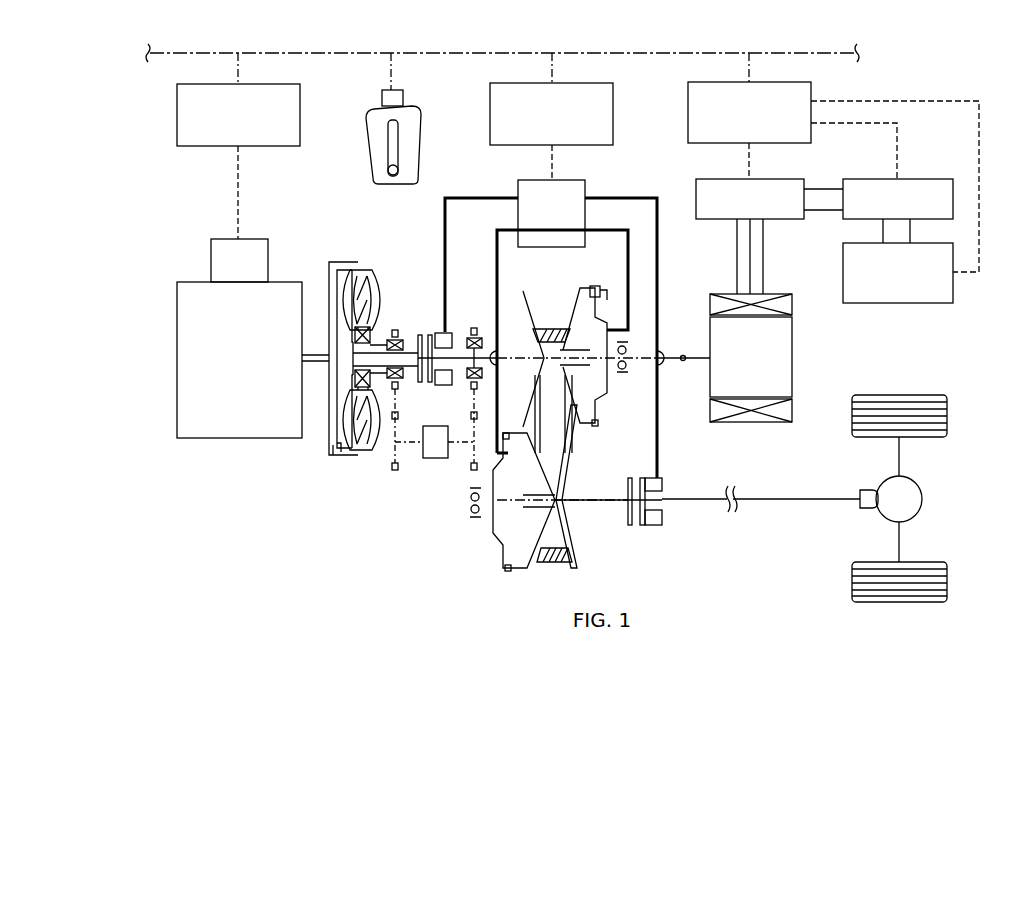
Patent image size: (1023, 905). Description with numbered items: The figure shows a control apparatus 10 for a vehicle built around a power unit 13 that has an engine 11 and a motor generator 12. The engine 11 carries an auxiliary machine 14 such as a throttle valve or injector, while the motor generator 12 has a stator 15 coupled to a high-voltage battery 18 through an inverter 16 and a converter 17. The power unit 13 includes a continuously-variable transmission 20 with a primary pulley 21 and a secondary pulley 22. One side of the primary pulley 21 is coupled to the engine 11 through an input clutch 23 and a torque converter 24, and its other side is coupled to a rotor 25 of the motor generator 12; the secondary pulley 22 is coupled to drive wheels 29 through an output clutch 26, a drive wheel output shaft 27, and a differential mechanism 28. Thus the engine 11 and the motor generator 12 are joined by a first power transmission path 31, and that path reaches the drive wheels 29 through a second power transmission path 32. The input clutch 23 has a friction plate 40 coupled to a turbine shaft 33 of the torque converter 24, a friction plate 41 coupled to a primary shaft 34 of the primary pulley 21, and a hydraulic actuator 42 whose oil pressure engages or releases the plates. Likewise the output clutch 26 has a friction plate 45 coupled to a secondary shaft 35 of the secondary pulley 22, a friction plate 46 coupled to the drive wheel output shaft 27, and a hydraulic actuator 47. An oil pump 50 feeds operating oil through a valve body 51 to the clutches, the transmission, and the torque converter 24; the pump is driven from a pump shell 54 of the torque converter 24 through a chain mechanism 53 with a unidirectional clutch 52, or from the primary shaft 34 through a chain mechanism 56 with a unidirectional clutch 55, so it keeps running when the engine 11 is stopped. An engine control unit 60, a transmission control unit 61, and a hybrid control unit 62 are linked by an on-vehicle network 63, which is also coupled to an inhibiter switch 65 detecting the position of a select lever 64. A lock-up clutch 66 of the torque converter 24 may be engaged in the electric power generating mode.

The control apparatus 10 is at (945, 55).
The engine 11 is at (177, 300).
The motor generator 12 is at (800, 352).
The power unit 13 is at (238, 540).
The auxiliary machine 14 is at (211, 256).
The stator 15 is at (720, 298).
The inverter 16 is at (696, 185).
The converter 17 is at (926, 179).
The high-voltage battery 18 is at (843, 260).
The continuously-variable transmission 20 is at (493, 496).
The primary pulley 21 is at (598, 284).
The secondary pulley 22 is at (500, 570).
The input clutch 23 is at (456, 342).
The torque converter 24 is at (334, 333).
The rotor 25 is at (694, 355).
The output clutch 26 is at (666, 510).
The drive wheel output shaft 27 is at (715, 506).
The differential mechanism 28 is at (917, 482).
The drive wheels 29 is at (934, 395).
The first power transmission path 31 is at (315, 350).
The second power transmission path 32 is at (782, 495).
The turbine shaft 33 is at (365, 356).
The primary shaft 34 is at (524, 362).
The secondary shaft 35 is at (595, 497).
The friction plate 40 is at (396, 338).
The friction plate 41 is at (430, 333).
The hydraulic actuator 42 is at (440, 386).
The friction plate 45 is at (630, 526).
The friction plate 46 is at (643, 526).
The hydraulic actuator 47 is at (662, 518).
The oil pump 50 is at (434, 458).
The valve body 51 is at (518, 188).
The unidirectional clutch 52 is at (399, 390).
The chain mechanism 53 is at (386, 477).
The pump shell 54 is at (380, 268).
The unidirectional clutch 55 is at (478, 337).
The chain mechanism 56 is at (465, 477).
The engine control unit 60 is at (177, 100).
The transmission control unit 61 is at (490, 101).
The hybrid control unit 62 is at (688, 100).
The on-vehicle network 63 is at (692, 48).
The select lever 64 is at (388, 170).
The inhibiter switch 65 is at (382, 97).
The lock-up clutch 66 is at (333, 450).